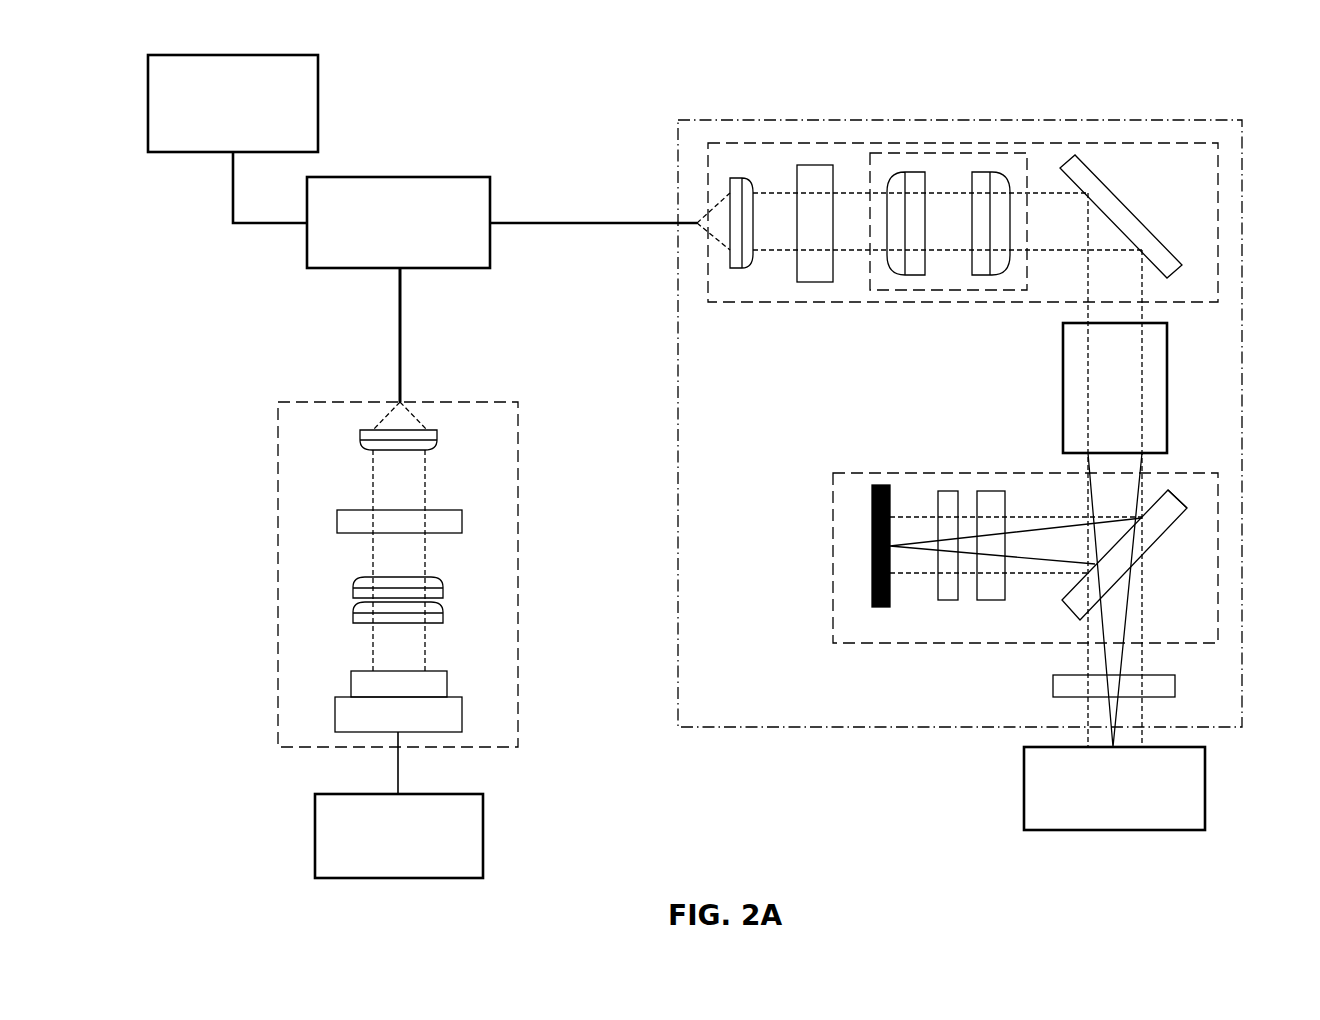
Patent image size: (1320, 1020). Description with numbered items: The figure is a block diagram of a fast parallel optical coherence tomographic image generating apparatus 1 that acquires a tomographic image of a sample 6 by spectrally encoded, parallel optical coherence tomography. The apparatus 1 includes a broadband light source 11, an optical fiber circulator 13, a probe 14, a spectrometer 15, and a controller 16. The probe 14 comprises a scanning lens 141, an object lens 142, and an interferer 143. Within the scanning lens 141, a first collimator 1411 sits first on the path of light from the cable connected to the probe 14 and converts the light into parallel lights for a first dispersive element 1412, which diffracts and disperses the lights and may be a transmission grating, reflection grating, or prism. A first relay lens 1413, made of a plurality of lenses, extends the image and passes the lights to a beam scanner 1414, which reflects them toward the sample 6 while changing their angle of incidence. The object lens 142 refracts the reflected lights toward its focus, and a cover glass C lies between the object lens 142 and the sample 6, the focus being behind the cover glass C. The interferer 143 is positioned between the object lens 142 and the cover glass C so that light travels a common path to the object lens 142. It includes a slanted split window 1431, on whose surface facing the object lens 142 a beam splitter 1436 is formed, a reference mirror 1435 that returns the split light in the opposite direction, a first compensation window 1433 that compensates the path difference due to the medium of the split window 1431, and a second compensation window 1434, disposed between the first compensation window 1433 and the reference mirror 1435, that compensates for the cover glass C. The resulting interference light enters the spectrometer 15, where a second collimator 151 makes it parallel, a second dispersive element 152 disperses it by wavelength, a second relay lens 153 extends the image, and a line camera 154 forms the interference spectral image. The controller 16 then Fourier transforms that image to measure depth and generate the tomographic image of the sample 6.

The fast parallel optical coherence tomographic image generating apparatus 1 is at (699, 31).
The broadband light source 11 is at (248, 53).
The optical fiber circulator 13 is at (440, 176).
The probe 14 is at (1243, 195).
The scanning lens 141 is at (962, 302).
The first collimator 1411 is at (740, 178).
The first dispersive element 1412 is at (815, 165).
The first relay lens 1413 is at (945, 153).
The beam scanner 1414 is at (1100, 185).
The object lens 142 is at (1167, 385).
The interferer 143 is at (833, 487).
The split window 1431 is at (1187, 508).
The first compensation window 1433 is at (990, 491).
The second compensation window 1434 is at (948, 491).
The reference mirror 1435 is at (872, 546).
The beam splitter 1436 is at (1172, 493).
The spectrometer 15 is at (278, 438).
The second collimator 151 is at (437, 438).
The second dispersive element 152 is at (462, 523).
The second relay lens 153 is at (443, 590).
The line camera 154 is at (462, 711).
The controller 16 is at (435, 793).
The sample 6 is at (1205, 787).
The cover glass C is at (1175, 683).